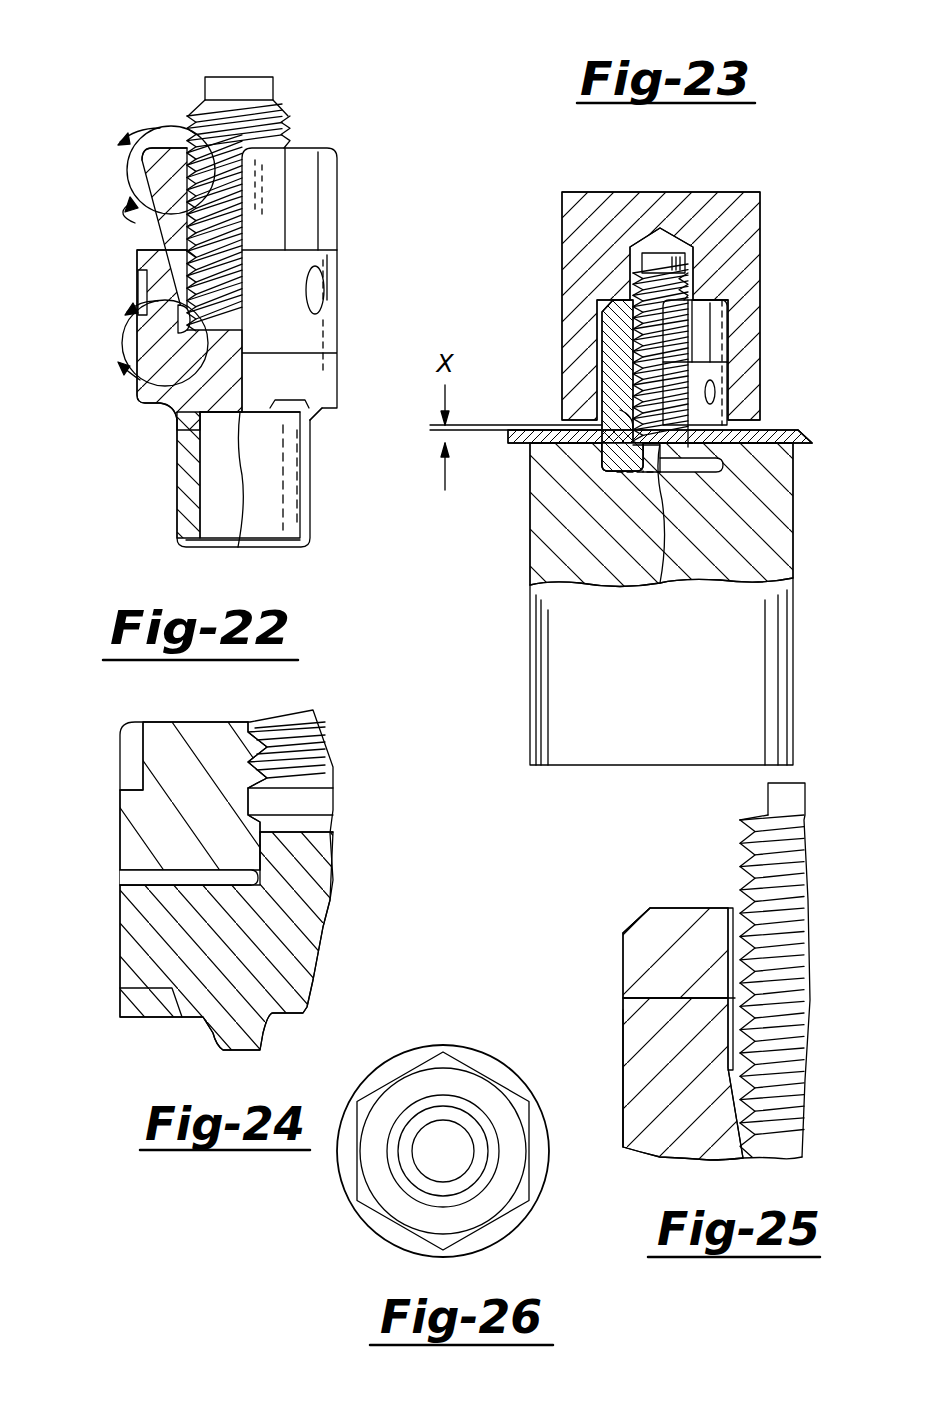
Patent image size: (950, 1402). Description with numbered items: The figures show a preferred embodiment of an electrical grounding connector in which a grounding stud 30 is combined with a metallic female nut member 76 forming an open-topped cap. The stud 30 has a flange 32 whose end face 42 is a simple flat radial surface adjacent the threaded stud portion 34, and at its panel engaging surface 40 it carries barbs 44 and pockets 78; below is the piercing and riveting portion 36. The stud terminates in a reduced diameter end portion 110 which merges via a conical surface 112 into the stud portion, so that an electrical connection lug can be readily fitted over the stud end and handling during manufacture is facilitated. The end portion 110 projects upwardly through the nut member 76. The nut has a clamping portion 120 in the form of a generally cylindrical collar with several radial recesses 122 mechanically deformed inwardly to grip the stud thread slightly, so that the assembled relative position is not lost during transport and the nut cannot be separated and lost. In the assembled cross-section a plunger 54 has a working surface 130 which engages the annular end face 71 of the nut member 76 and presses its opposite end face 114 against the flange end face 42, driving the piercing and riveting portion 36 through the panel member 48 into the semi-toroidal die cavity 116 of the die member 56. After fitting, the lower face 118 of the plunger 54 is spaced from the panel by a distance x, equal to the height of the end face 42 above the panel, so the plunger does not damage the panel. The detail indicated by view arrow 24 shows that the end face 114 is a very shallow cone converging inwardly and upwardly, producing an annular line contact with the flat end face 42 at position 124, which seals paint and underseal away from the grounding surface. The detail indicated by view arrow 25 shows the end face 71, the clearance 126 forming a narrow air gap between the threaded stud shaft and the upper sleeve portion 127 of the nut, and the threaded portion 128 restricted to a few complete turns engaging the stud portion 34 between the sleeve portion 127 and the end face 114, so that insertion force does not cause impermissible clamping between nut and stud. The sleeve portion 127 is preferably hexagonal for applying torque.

In FIG. 22, the view arrow 24 is at (152, 343).
In FIG. 22, the view arrow 25 is at (150, 174).
In FIG. 22, the grounding stud 30 is at (207, 479).
In FIG. 23, the grounding stud 30 is at (700, 368).
In FIG. 22, the flange 32 is at (331, 333).
In FIG. 24, the flange 32 is at (184, 880).
In FIG. 22, the stud portion 34 is at (288, 120).
In FIG. 22, the piercing and riveting portion 36 is at (177, 523).
In FIG. 22, the panel engaging surface 40 is at (243, 428).
In FIG. 22, the end face 42 is at (140, 380).
In FIG. 23, the end face 42 is at (617, 443).
In FIG. 24, the end face 42 is at (200, 882).
In FIG. 22, the barbs 44 is at (316, 421).
In FIG. 23, the panel member 48 is at (803, 447).
In FIG. 23, the plunger 54 is at (693, 306).
In FIG. 23, the die member 56 is at (786, 537).
In FIG. 22, the annular end face 71 is at (157, 252).
In FIG. 23, the annular end face 71 is at (549, 401).
In FIG. 25, the annular end face 71 is at (666, 998).
In FIG. 22, the female nut member 76 is at (308, 148).
In FIG. 25, the female nut member 76 is at (660, 1035).
In FIG. 26, the female nut member 76 is at (492, 1197).
In FIG. 22, the pockets 78 is at (292, 404).
In FIG. 22, the reduced diameter end portion 110 is at (239, 166).
In FIG. 23, the reduced diameter end portion 110 is at (663, 247).
In FIG. 25, the reduced diameter end portion 110 is at (762, 953).
In FIG. 26, the reduced diameter end portion 110 is at (450, 1135).
In FIG. 22, the conical surface 112 is at (200, 108).
In FIG. 25, the conical surface 112 is at (757, 823).
In FIG. 26, the conical surface 112 is at (413, 1175).
In FIG. 22, the end face 114 is at (190, 332).
In FIG. 23, the end face 114 is at (633, 420).
In FIG. 24, the end face 114 is at (202, 865).
In FIG. 23, the semi-toroidal die cavity 116 is at (607, 471).
In FIG. 23, the lower face 118 is at (757, 427).
In FIG. 22, the clamping portion 120 is at (327, 258).
In FIG. 22, the radial recesses 122 is at (324, 293).
In FIG. 24, the annular line contact position 124 is at (200, 870).
In FIG. 25, the clearance 126 is at (735, 995).
In FIG. 25, the sleeve portion 127 is at (630, 947).
In FIG. 22, the threaded portion 128 is at (193, 257).
In FIG. 23, the working surface 130 is at (703, 297).